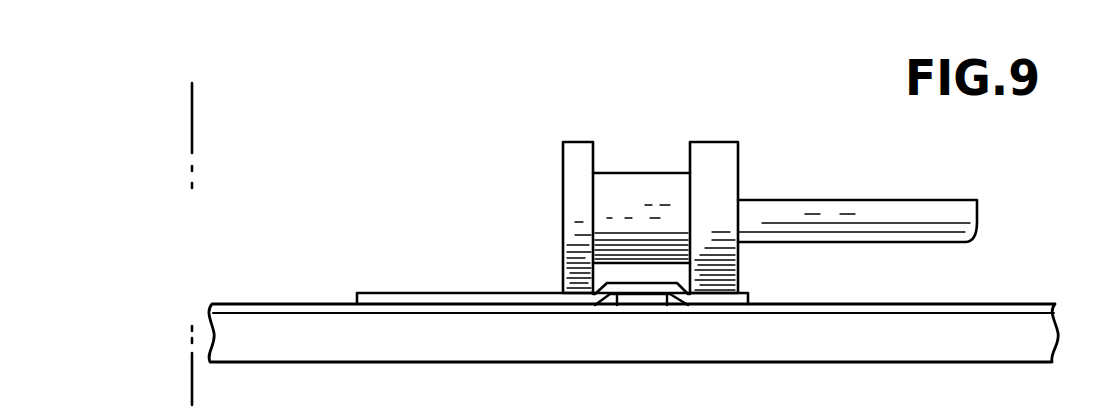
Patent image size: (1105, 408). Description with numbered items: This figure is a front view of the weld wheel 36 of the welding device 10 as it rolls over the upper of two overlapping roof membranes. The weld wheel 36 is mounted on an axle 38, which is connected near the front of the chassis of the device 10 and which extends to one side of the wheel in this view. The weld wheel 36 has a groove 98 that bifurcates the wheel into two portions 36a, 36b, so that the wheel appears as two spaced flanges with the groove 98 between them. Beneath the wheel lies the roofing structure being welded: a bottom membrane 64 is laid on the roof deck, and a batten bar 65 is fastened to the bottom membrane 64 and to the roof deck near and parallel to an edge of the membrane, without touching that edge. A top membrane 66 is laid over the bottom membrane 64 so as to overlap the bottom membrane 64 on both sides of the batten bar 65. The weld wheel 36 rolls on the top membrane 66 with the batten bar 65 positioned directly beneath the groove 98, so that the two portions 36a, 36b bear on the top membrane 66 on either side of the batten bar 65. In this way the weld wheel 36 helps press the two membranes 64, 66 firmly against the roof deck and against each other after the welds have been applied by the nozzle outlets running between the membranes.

The device 10 is at (230, 393).
The weld wheel 36 is at (644, 191).
The first portion of weld wheel 36a is at (577, 167).
The second portion of weld wheel 36b is at (725, 147).
The groove 98 is at (650, 195).
The axle 38 is at (887, 203).
The bottom membrane 64 is at (987, 310).
The top membrane 66 is at (475, 297).
The batten bar 65 is at (647, 300).